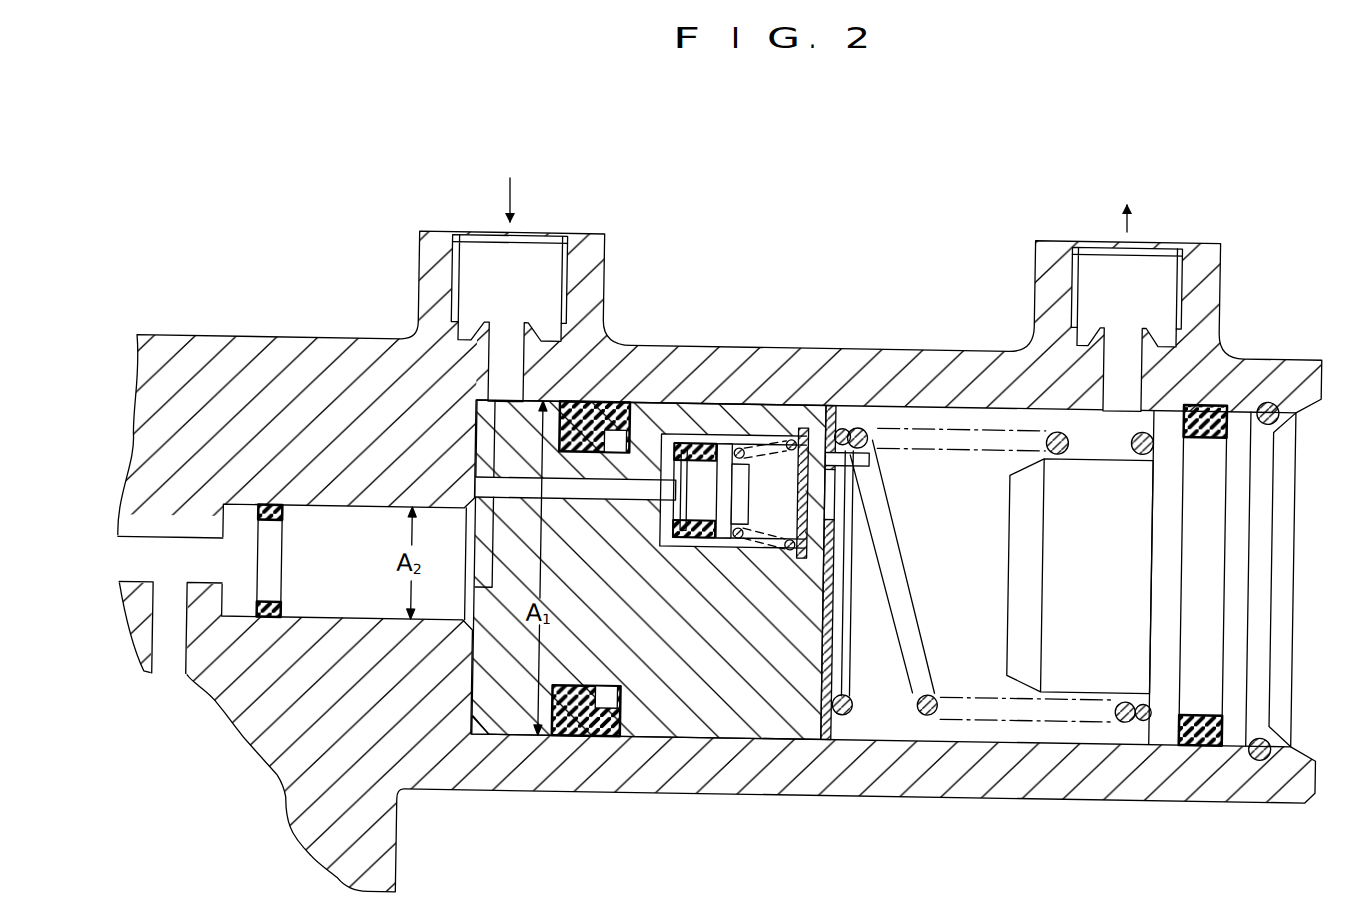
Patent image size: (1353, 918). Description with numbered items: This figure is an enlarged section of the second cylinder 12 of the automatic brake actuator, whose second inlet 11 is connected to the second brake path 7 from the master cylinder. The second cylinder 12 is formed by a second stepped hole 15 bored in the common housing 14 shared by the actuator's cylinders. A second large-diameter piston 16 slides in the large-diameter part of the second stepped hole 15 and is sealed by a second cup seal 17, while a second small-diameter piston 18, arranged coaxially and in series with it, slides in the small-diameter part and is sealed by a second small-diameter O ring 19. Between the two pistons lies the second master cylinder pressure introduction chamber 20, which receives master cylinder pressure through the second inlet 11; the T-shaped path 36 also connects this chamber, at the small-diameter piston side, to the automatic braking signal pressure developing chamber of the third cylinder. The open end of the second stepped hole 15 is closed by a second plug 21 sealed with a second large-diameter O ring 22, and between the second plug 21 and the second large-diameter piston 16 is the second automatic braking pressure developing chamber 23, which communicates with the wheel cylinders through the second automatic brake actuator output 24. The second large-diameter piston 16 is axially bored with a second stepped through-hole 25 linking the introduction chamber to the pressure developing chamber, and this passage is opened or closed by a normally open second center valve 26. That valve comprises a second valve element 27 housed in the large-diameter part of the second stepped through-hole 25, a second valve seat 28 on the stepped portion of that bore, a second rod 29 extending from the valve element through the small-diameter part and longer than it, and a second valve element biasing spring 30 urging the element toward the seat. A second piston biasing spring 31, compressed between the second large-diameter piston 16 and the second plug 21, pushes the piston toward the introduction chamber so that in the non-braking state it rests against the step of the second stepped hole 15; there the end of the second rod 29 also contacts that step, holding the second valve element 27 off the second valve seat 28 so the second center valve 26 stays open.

The second brake path 7 is at (506, 207).
The second inlet 11 is at (470, 289).
The second cylinder 12 is at (890, 218).
The housing 14 is at (305, 350).
The second stepped hole 15 is at (1020, 735).
The second large-diameter piston 16 is at (722, 720).
The second cup seal 17 is at (575, 720).
The second small-diameter piston 18 is at (358, 606).
The second small-diameter O ring 19 is at (265, 617).
The second master cylinder pressure introduction chamber 20 is at (480, 723).
The second plug 21 is at (1090, 665).
The second large-diameter O ring 22 is at (1195, 750).
The second automatic braking pressure developing chamber 23 is at (960, 475).
The second automatic brake actuator output 24 is at (1163, 290).
The second stepped through-hole 25 is at (765, 458).
The second center valve 26 is at (668, 412).
The second valve element 27 is at (706, 470).
The second valve seat 28 is at (654, 462).
The second rod 29 is at (552, 480).
The second valve element biasing spring 30 is at (804, 425).
The second piston biasing spring 31 is at (920, 716).
The T-shaped path 36 is at (137, 555).